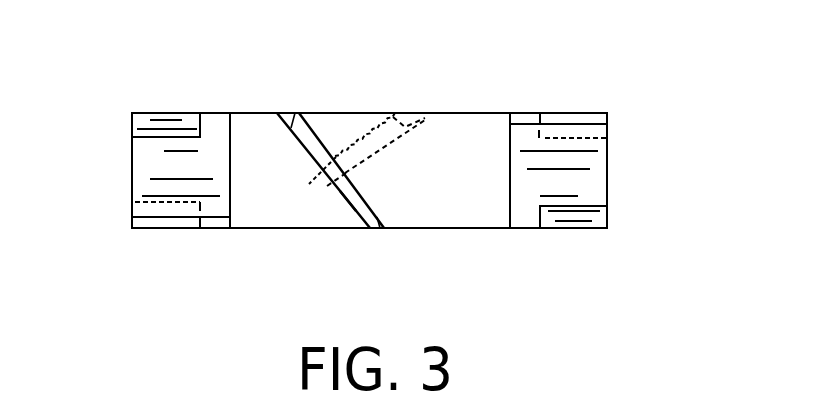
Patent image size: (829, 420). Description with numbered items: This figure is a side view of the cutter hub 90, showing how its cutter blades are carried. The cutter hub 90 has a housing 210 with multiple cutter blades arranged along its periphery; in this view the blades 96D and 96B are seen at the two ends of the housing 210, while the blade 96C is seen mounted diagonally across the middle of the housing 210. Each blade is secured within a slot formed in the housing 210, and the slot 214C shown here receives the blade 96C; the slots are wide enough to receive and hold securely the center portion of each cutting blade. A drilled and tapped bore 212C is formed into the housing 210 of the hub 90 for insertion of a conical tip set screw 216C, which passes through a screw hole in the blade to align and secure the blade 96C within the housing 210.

The cutter hub 90 is at (383, 170).
The cutter blade 96B is at (608, 178).
The cutter blade 96C is at (359, 193).
The cutter blade 96D is at (132, 168).
The housing 210 is at (486, 228).
The drilled and tapped bore 212C is at (343, 130).
The slot 214C is at (356, 210).
The conical tip set screw 216C is at (412, 112).